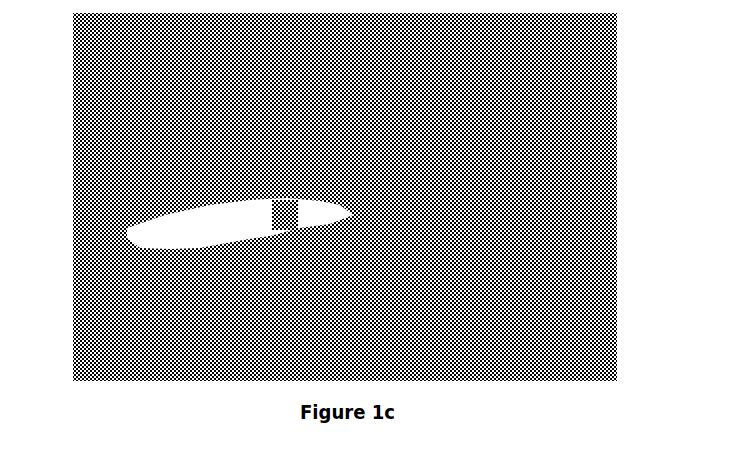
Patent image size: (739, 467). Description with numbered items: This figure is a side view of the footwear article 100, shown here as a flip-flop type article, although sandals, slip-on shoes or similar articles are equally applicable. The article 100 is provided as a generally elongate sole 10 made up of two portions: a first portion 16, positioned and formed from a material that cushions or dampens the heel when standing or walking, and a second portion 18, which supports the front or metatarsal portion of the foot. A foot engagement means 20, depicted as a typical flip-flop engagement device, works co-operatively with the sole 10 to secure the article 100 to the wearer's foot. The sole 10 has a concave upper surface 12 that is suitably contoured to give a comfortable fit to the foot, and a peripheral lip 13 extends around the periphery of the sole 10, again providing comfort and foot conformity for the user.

The sole 10 is at (256, 266).
The concave upper surface 12 is at (247, 207).
The peripheral lip 13 is at (338, 216).
The first portion 16 is at (493, 195).
The second portion 18 is at (232, 232).
The foot engagement means 20 is at (280, 177).
The footwear article 100 is at (472, 135).